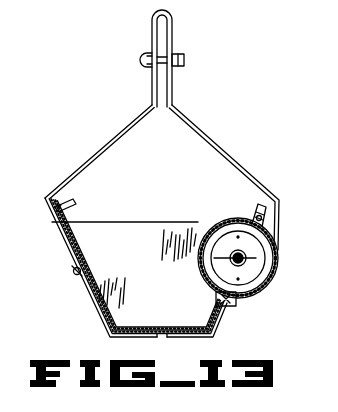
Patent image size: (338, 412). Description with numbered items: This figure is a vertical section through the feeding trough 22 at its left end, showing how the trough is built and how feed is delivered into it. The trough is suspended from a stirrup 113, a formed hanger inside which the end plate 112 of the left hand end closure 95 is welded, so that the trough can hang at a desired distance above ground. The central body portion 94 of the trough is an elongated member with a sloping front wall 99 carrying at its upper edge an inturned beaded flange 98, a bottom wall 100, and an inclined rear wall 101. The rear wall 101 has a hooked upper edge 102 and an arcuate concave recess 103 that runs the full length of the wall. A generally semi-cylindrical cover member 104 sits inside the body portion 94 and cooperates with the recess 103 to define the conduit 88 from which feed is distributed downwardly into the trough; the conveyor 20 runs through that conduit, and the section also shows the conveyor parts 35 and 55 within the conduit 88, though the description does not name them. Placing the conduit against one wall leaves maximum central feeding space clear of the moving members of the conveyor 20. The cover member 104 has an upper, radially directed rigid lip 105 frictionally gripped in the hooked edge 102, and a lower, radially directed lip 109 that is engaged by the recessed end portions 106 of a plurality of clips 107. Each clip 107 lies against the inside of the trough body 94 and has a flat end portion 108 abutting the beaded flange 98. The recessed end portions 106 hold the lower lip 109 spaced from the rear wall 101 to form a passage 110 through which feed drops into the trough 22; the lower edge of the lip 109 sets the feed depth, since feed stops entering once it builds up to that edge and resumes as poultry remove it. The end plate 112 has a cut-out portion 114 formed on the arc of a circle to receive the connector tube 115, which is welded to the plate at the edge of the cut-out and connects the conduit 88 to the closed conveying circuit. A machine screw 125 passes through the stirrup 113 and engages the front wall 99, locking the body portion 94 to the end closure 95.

The stirrup 113 is at (200, 136).
The feeding trough 22 is at (92, 307).
The central body portion 94 is at (90, 290).
The clip 107 is at (78, 252).
The sloping front wall 99 is at (62, 250).
The left hand end closure 95 is at (62, 182).
The flat end portion 108 is at (66, 234).
The end plate 112 is at (92, 264).
The inturned beaded flange 98 is at (74, 206).
The machine screw 125 is at (70, 273).
The bottom wall 100 is at (130, 333).
The inclined rear wall 101 is at (223, 327).
The cover member 104 is at (225, 218).
The conduit 88 is at (275, 222).
The shaft hub 55 is at (250, 257).
The wheel 35 is at (258, 249).
The arcuate concave recess 103 is at (272, 262).
The conveyor 20 is at (266, 282).
The hooked upper edge 102 is at (258, 204).
The upper radially directed rigid lip 105 is at (264, 214).
The passage 110 is at (236, 301).
The lower radially directed lip 109 is at (218, 296).
The recessed end portion 106 is at (218, 302).
The cut-out portion 114 is at (208, 264).
The connector tube 115 is at (198, 230).